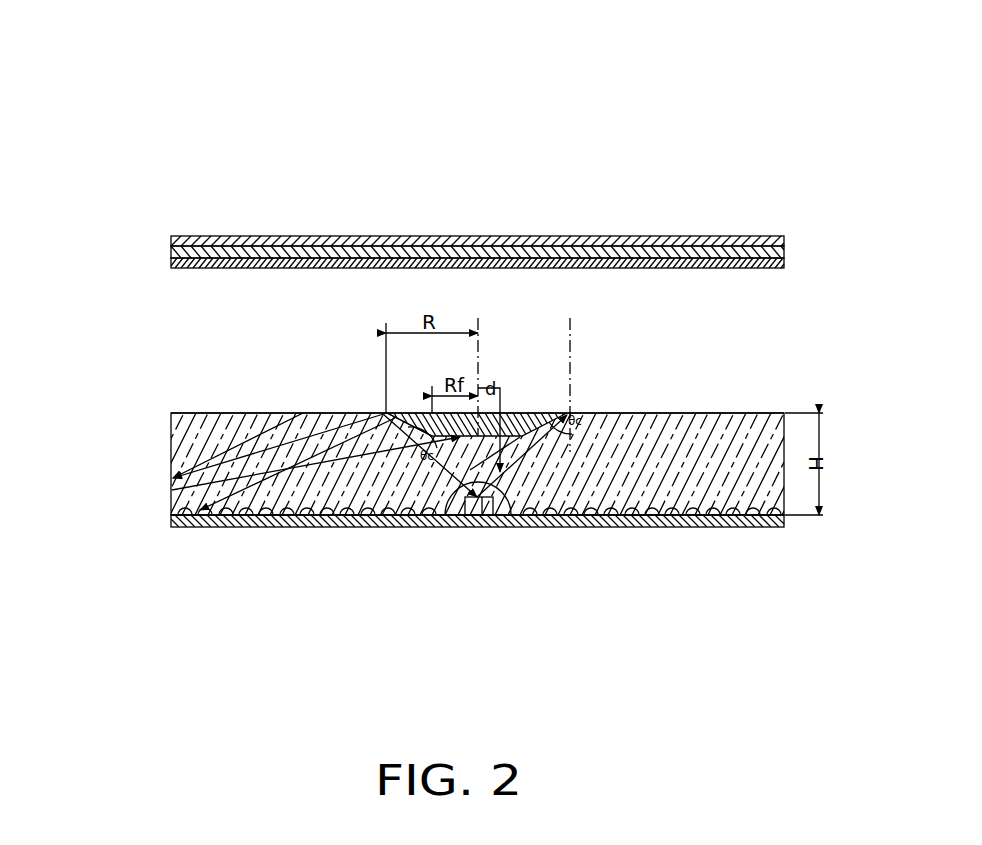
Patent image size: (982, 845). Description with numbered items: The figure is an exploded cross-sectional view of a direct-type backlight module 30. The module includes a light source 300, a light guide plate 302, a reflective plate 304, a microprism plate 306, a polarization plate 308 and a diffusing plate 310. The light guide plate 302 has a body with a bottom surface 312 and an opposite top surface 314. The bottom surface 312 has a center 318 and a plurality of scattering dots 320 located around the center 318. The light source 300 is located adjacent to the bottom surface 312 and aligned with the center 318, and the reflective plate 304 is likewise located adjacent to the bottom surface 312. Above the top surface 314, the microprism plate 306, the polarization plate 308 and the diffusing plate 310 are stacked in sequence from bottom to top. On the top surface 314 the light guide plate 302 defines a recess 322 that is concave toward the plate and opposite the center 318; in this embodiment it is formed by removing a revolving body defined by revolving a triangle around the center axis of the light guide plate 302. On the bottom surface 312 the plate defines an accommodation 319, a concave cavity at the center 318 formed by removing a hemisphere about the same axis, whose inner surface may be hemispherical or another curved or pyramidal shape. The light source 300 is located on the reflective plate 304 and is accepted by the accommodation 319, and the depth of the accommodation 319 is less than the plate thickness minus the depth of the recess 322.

The direct-type backlight module 30 is at (500, 70).
The light guide plate 302 is at (92, 382).
The reflective plate 304 is at (765, 528).
The microprism plate 306 is at (785, 263).
The polarization plate 308 is at (785, 252).
The diffusing plate 310 is at (785, 238).
The bottom surface 312 is at (190, 522).
The top surface 314 is at (199, 411).
The center 318 is at (466, 515).
The accommodation 319 is at (500, 512).
The scattering dots 320 is at (246, 512).
The recess 322 is at (528, 422).
The light source 300 is at (482, 515).